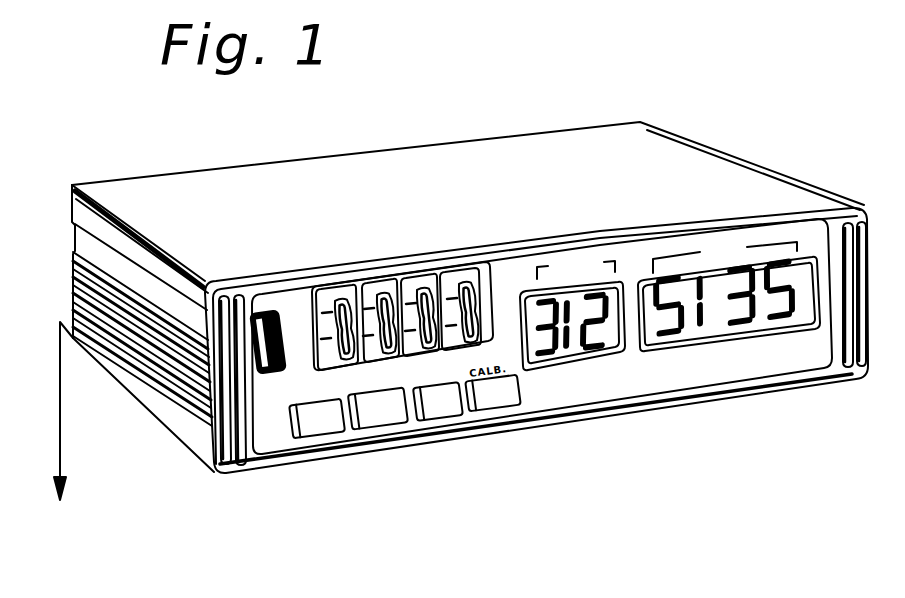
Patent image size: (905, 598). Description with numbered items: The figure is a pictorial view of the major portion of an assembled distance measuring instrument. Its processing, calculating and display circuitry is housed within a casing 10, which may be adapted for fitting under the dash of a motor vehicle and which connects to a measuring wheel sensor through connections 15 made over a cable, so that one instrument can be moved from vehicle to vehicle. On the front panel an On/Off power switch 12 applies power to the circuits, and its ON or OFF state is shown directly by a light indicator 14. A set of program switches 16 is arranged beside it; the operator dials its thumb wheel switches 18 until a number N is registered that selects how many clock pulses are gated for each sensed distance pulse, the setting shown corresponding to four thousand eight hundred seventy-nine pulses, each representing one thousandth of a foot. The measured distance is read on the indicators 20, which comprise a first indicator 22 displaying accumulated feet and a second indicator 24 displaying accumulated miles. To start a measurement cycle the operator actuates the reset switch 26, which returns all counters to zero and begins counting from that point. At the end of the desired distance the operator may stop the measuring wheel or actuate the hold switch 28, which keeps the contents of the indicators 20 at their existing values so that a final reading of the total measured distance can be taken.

The casing 10 is at (462, 165).
The On/Off power switch 12 is at (317, 428).
The light indicator 14 is at (270, 312).
The connections 15 is at (60, 420).
The program switches 16 is at (297, 280).
The thumb wheel switches 18 is at (340, 298).
The indicators 20 is at (808, 233).
The first indicator 22 is at (733, 334).
The second indicator 24 is at (605, 352).
The reset switch 26 is at (436, 408).
The hold switch 28 is at (375, 420).